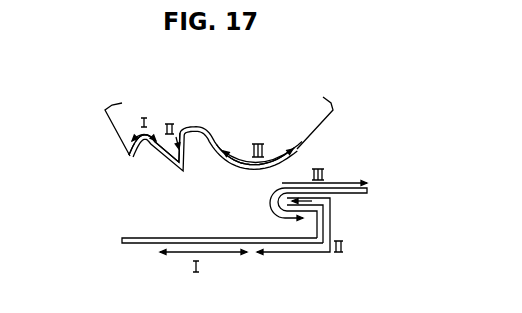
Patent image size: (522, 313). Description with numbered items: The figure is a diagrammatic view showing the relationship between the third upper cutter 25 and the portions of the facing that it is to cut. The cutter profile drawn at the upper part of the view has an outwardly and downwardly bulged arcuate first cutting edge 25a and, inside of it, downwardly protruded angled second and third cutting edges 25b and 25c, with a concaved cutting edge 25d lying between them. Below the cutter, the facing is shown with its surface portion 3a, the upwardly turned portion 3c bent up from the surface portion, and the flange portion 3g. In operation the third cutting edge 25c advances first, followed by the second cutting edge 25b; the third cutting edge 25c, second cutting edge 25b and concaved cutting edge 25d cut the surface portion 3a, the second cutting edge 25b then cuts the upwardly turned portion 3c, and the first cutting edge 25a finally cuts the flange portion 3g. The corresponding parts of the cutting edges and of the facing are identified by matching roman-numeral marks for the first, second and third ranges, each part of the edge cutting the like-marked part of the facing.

The third upper cutter 25 is at (273, 122).
The first cutting edge 25a is at (247, 170).
The second cutting edge 25b is at (179, 171).
The third cutting edge 25c is at (137, 157).
The concaved cutting edge 25d is at (142, 142).
The surface portion 3a is at (130, 244).
The upwardly turned portion 3c is at (323, 226).
The flange portion 3g is at (367, 193).